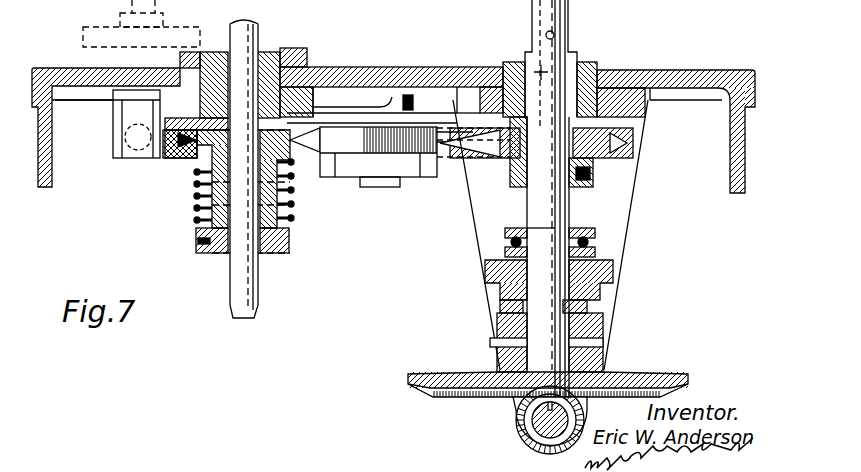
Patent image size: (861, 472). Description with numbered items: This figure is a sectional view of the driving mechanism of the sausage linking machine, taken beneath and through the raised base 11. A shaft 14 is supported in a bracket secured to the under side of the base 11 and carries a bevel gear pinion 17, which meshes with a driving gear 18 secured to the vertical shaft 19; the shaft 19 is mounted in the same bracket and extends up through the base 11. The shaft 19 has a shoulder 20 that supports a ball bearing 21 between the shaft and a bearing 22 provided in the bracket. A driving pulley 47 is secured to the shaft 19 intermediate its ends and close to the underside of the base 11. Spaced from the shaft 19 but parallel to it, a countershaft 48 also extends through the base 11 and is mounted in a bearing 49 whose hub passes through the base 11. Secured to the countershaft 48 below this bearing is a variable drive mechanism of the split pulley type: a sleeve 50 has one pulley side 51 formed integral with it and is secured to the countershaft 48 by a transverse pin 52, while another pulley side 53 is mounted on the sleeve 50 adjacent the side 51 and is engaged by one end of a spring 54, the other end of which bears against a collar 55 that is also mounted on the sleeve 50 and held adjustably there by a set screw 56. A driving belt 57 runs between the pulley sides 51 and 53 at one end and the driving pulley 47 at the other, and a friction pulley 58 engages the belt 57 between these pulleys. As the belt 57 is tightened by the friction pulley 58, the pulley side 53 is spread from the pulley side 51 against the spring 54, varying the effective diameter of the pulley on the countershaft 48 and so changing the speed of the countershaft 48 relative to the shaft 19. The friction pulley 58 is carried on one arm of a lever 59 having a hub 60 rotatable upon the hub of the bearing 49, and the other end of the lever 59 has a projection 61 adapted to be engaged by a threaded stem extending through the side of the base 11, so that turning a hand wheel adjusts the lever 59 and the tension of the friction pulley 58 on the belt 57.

The raised base 11 is at (47, 67).
The shaft 14 is at (540, 425).
The bevel gear pinion 17 is at (525, 447).
The driving gear 18 is at (630, 372).
The vertical shaft 19 is at (567, 208).
The shoulder 20 is at (540, 228).
The ball bearing 21 is at (597, 233).
The bearing 22 is at (490, 280).
The driving pulley 47 is at (510, 165).
The countershaft 48 is at (259, 31).
The bearing 49 is at (300, 47).
The sleeve 50 is at (277, 209).
The pulley side 51 is at (293, 133).
The transverse pin 52 is at (277, 192).
The pulley side 53 is at (190, 158).
The spring 54 is at (198, 194).
The collar 55 is at (287, 250).
The set screw 56 is at (197, 241).
The driving belt 57 is at (170, 155).
The friction pulley 58 is at (417, 175).
The lever 59 is at (342, 100).
The hub 60 is at (202, 111).
The projection 61 is at (127, 118).